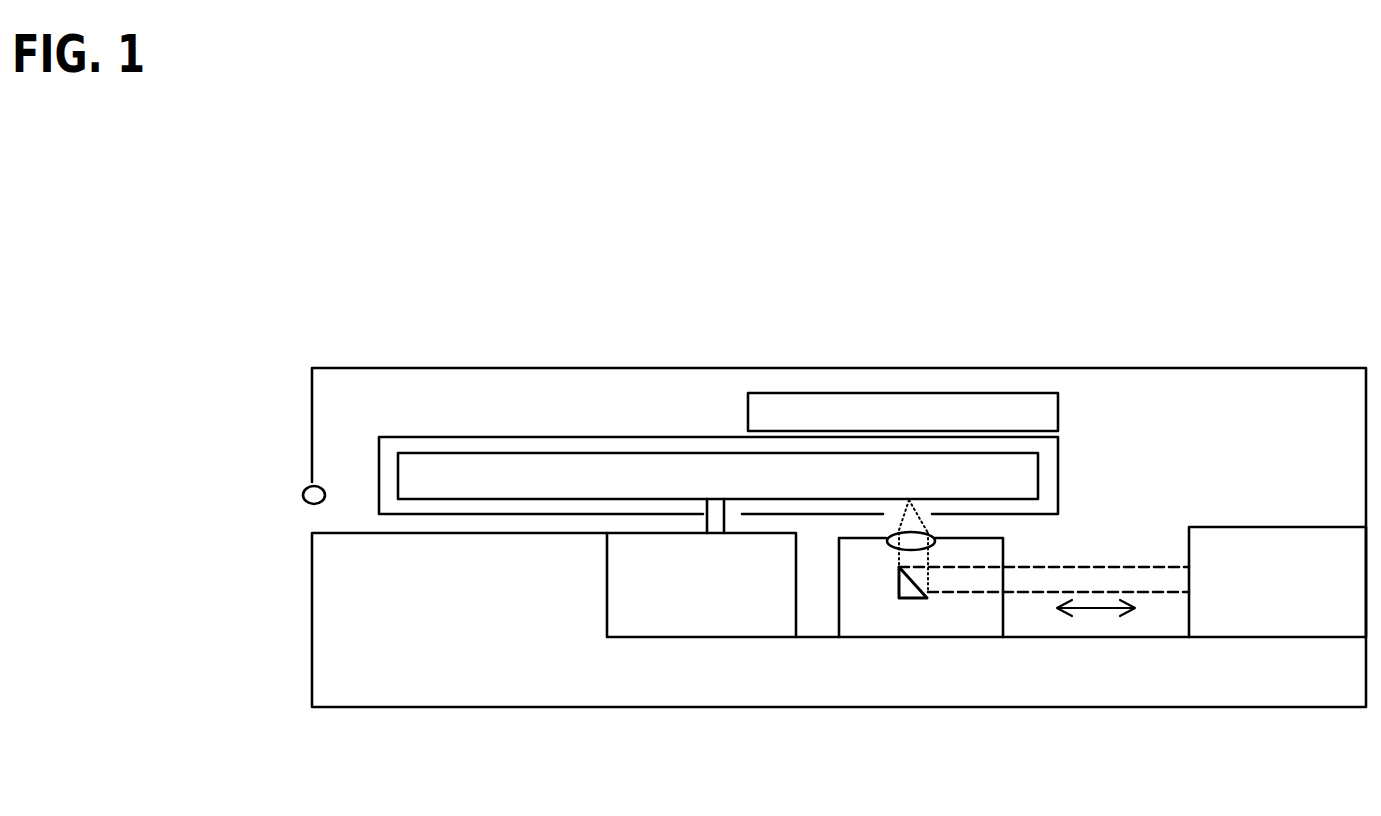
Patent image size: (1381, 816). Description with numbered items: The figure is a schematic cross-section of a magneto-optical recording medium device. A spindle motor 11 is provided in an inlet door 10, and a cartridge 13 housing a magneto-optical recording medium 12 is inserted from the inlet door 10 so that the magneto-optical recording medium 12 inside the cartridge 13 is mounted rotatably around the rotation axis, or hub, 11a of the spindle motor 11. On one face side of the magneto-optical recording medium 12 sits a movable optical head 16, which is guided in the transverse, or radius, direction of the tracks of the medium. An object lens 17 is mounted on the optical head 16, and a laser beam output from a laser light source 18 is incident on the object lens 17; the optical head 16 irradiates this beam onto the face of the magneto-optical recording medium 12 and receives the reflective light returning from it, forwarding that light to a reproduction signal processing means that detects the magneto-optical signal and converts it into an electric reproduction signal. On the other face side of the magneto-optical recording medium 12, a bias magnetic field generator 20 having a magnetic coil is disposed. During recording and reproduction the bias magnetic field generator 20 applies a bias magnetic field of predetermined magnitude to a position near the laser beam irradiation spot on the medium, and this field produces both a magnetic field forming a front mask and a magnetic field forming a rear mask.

The inlet door 10 is at (312, 408).
The spindle motor 11 is at (701, 585).
The rotation axis (hub) 11a is at (703, 523).
The magneto-optical recording medium 12 is at (443, 452).
The cartridge 13 is at (538, 437).
The optical head 16 is at (858, 602).
The object lens 17 is at (935, 526).
The laser light source 18 is at (1277, 579).
The bias magnetic field generator 20 is at (966, 393).